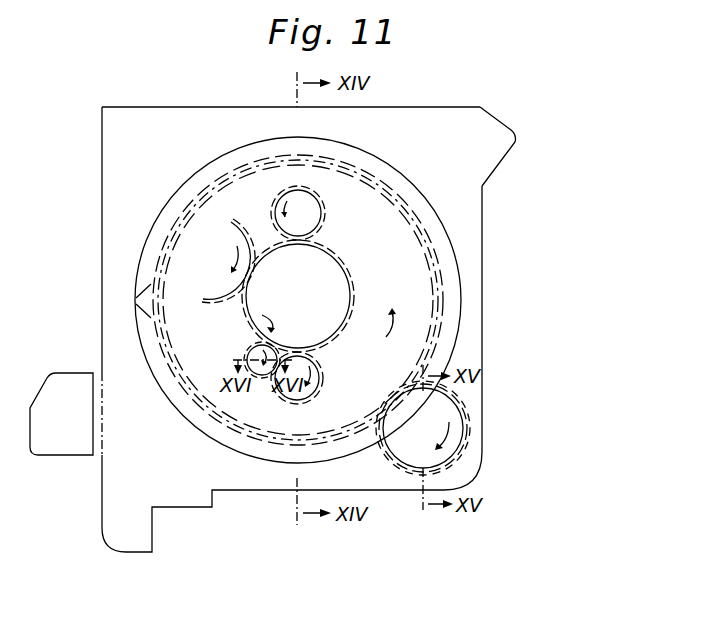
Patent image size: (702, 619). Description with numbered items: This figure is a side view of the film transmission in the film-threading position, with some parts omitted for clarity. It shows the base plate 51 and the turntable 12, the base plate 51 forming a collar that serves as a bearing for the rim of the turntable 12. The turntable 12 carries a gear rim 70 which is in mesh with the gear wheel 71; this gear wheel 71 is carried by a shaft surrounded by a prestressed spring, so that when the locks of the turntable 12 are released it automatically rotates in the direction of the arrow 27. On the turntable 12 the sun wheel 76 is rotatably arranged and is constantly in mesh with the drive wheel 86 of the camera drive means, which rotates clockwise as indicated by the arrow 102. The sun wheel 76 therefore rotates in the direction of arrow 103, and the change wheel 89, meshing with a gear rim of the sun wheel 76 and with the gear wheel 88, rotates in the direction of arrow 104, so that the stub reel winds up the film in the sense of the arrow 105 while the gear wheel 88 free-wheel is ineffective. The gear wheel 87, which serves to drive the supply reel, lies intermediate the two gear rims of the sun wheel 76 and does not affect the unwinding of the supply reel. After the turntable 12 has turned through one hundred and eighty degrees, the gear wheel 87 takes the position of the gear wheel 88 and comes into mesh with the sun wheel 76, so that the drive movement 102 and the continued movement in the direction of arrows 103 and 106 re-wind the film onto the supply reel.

The turntable 12 is at (457, 258).
The base plate 51 is at (422, 122).
The gear rim 70 is at (402, 203).
The sun wheel 76 is at (353, 289).
The arrow 106 is at (289, 224).
The gear wheel 87 is at (287, 206).
The drive wheel 86 is at (234, 223).
The arrow 102 is at (229, 269).
The arrow 103 is at (262, 315).
The arrow 104 is at (272, 356).
The arrow 105 is at (314, 386).
The change wheel 89 is at (255, 368).
The gear wheel 88 is at (307, 390).
The arrow 27 is at (388, 328).
The gear wheel 71 is at (463, 442).